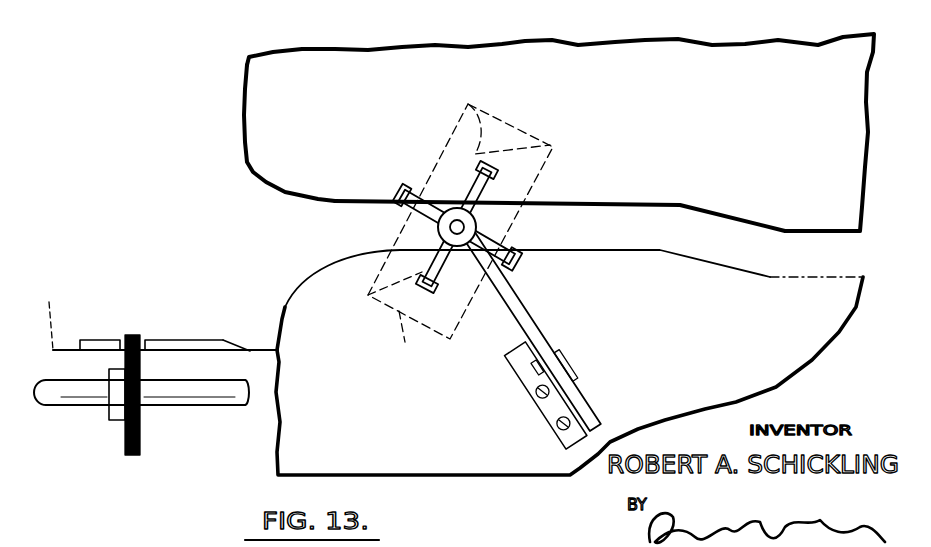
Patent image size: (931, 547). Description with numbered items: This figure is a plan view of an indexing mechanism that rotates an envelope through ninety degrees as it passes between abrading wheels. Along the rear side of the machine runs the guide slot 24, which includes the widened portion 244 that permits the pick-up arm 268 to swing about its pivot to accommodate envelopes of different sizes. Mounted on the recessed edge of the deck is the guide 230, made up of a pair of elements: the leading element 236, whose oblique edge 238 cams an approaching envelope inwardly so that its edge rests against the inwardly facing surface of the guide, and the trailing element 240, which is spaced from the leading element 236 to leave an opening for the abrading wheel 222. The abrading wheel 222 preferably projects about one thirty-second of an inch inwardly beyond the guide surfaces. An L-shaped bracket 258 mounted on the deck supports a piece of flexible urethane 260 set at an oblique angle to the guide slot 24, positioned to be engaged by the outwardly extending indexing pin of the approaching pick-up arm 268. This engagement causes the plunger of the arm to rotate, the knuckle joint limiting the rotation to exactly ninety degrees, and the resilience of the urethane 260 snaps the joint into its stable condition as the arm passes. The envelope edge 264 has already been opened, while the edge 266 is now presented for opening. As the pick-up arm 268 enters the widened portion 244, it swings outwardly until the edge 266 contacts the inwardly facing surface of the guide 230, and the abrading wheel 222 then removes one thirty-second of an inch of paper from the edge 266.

The slot 24 is at (806, 230).
The widened portion 244 is at (260, 180).
The guide 230 is at (192, 322).
The trailing element 240 is at (96, 337).
The leading element 236 is at (162, 337).
The oblique edge 238 is at (233, 338).
The abrading wheel 222 is at (135, 432).
The urethane 260 is at (518, 300).
The L-shaped bracket 258 is at (568, 400).
The pick-up arm 268 is at (467, 218).
The edge 264 is at (509, 222).
The edge 266 is at (400, 321).